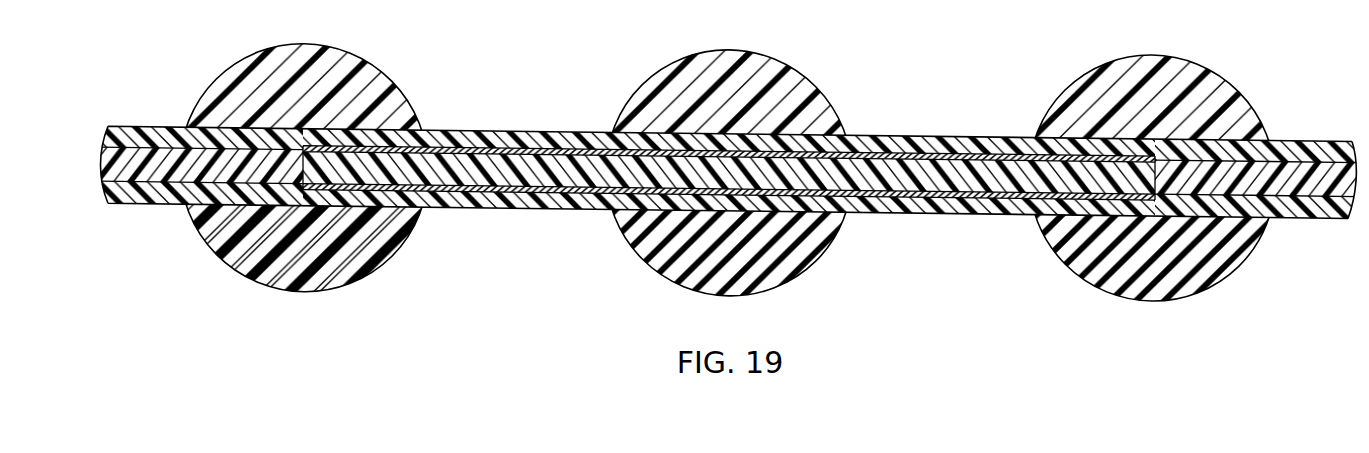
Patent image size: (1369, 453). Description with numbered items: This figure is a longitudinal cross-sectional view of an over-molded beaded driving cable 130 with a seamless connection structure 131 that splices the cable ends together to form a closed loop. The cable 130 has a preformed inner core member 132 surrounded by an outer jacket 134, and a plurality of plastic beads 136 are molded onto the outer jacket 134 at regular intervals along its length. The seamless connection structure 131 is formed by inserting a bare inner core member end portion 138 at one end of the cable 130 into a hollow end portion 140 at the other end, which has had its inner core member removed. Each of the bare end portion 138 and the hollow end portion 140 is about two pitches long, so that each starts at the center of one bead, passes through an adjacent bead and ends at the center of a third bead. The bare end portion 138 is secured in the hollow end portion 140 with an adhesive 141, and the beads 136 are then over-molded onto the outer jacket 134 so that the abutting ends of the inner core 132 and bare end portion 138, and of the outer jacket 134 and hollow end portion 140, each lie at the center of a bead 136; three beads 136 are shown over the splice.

The over-molded beaded driving cable 130 is at (731, 156).
The seamless connection structure 131 is at (727, 184).
The preformed inner core member 132 is at (973, 187).
The outer jacket 134 is at (1324, 216).
The plastic beads 136 is at (290, 277).
The bare inner core member end portion 138 is at (500, 176).
The hollow end portion 140 is at (829, 175).
The adhesive 141 is at (925, 198).